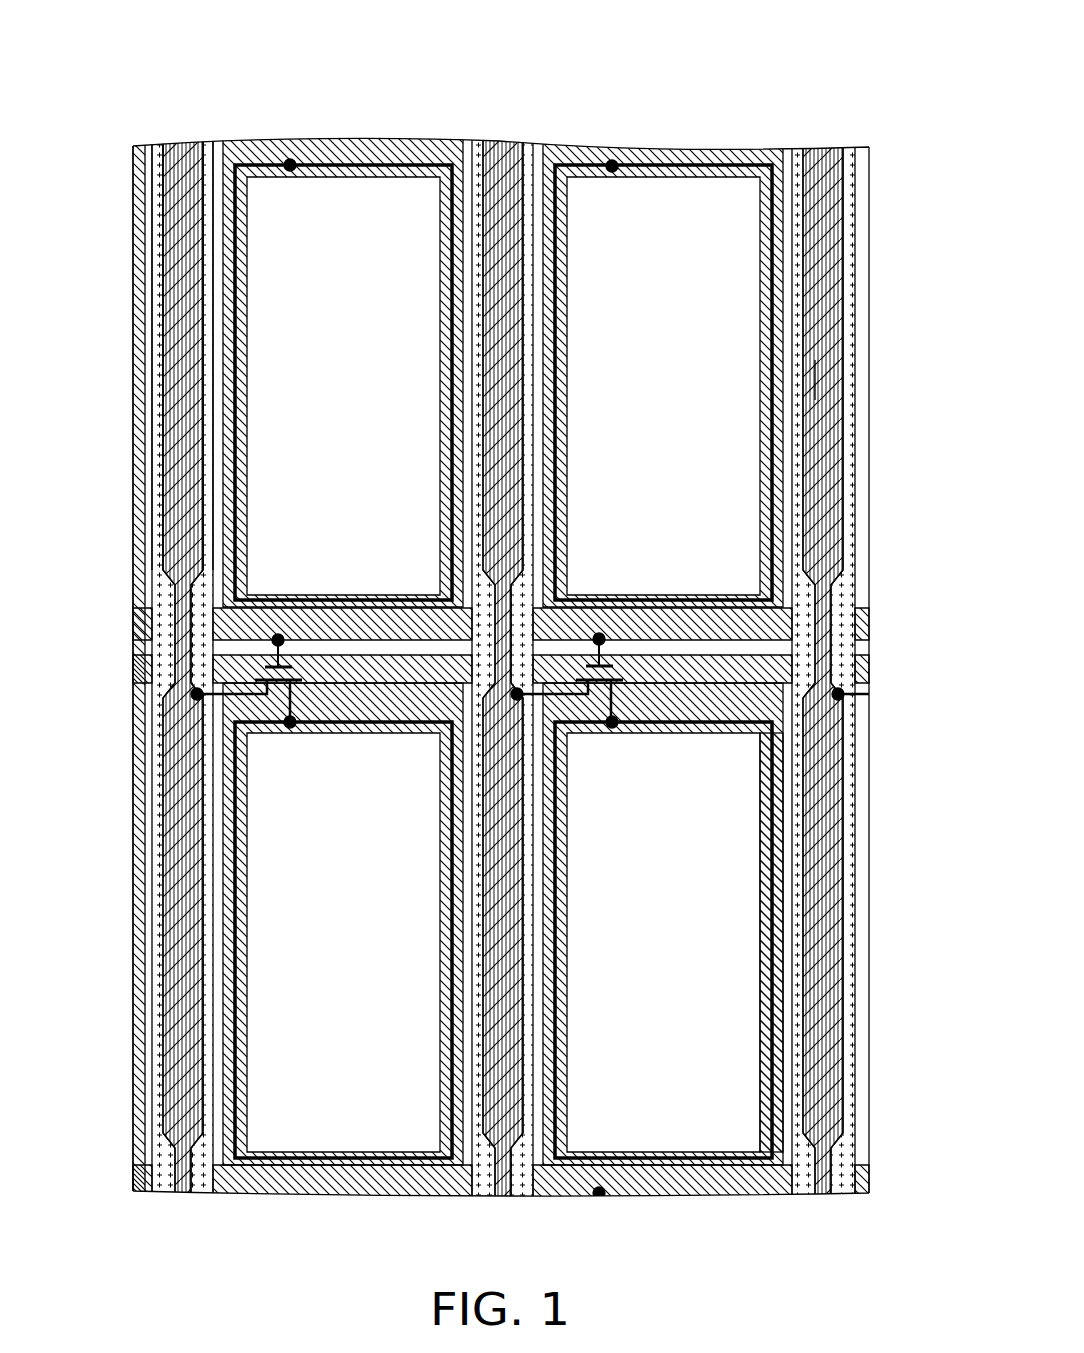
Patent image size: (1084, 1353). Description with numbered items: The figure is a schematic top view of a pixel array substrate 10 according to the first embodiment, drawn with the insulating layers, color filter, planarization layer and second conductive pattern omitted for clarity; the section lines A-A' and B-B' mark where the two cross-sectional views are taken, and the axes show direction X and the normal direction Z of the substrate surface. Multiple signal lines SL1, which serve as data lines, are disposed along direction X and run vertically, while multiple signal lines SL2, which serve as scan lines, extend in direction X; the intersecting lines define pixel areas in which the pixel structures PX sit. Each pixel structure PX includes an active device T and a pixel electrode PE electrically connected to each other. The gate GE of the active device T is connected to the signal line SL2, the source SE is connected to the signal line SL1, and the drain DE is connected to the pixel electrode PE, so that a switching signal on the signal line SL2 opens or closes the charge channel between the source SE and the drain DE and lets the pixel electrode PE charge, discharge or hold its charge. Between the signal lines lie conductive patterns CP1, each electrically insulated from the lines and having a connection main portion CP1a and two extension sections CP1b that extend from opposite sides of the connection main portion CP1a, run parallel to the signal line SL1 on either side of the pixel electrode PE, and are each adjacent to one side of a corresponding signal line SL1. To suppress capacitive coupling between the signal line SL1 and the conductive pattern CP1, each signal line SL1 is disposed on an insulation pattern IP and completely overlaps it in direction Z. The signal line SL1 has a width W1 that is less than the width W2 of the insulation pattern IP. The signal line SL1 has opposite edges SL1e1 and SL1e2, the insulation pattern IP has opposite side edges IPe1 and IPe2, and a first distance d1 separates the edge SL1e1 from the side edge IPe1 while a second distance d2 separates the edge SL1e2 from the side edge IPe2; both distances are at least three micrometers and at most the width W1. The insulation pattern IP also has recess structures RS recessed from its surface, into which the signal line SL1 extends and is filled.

The pixel array substrate 10 is at (942, 1272).
The signal line SL1 is at (165, 397).
The signal line SL2 is at (869, 624).
The insulation pattern IP is at (856, 332).
The conductive pattern CP1 is at (593, 633).
The connection main portion CP1a is at (763, 708).
The extension section CP1b is at (783, 833).
The pixel structure PX is at (530, 679).
The pixel electrode PE is at (717, 720).
The active device T is at (530, 679).
The gate GE is at (285, 667).
The source SE is at (267, 696).
The drain DE is at (303, 694).
The recess structure RS is at (850, 394).
The width of the signal line W1 is at (875, 197).
The width of the insulation pattern W2 is at (890, 246).
The first distance d1 is at (188, 120).
The second distance d2 is at (213, 143).
The edge of the signal line SL1e1 is at (154, 213).
The edge of the signal line SL1e2 is at (212, 213).
The side edge of the insulation pattern IPe1 is at (143, 257).
The side edge of the insulation pattern IPe2 is at (222, 256).
The section line A-A' A is at (426, 148).
The section line A- A' is at (581, 148).
The section line B-B' B is at (498, 1224).
The section line B- B' is at (585, 1224).
The direction X is at (877, 65).
The direction Z is at (874, 24).